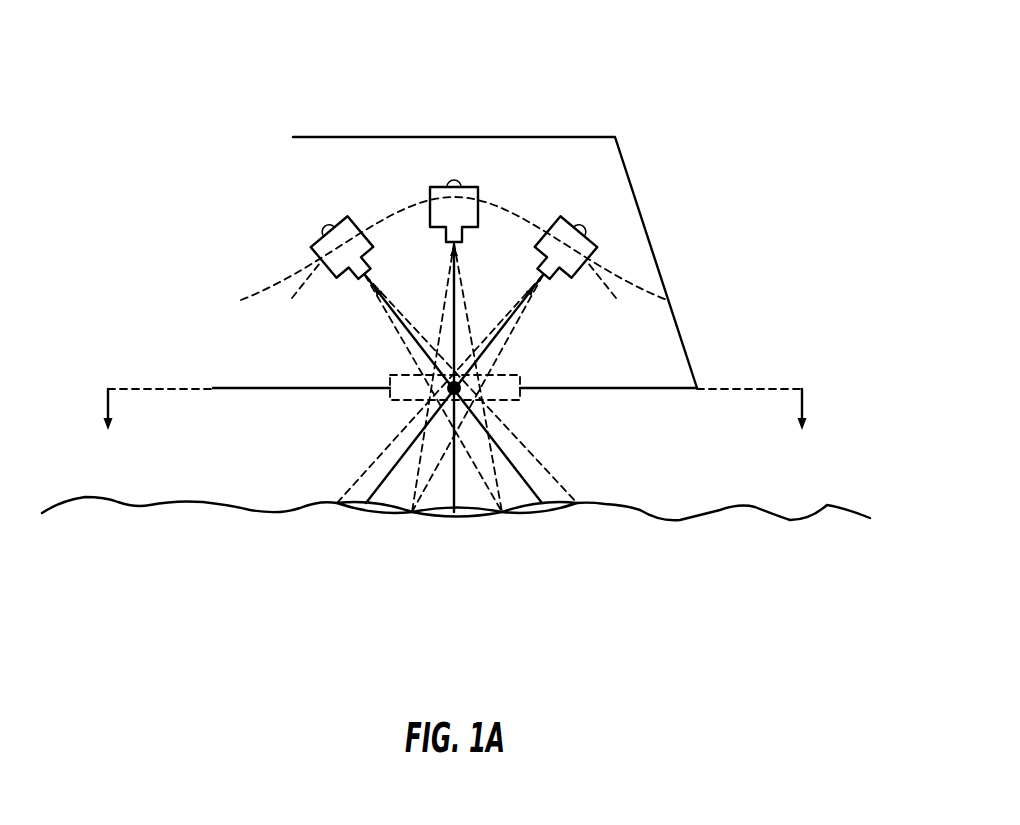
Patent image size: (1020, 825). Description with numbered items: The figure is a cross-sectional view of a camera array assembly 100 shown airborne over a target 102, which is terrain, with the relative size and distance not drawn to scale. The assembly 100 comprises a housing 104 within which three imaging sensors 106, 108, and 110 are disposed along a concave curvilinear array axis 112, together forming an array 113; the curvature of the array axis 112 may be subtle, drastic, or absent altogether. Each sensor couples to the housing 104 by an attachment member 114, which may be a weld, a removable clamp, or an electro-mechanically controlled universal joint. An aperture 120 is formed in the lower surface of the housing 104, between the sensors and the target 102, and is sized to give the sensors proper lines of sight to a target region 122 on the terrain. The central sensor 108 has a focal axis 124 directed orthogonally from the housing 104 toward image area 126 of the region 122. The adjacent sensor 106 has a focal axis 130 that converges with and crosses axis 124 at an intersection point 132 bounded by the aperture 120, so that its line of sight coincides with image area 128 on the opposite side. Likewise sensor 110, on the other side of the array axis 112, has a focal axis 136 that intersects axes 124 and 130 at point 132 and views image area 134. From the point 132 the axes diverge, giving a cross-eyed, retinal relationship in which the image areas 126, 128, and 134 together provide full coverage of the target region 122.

The camera array assembly 100 is at (684, 65).
The target 102 is at (826, 505).
The housing 104 is at (695, 373).
The imaging sensor 106 is at (348, 214).
The imaging sensor 108 is at (478, 188).
The imaging sensor 110 is at (559, 217).
The concave curvilinear array axis 112 is at (243, 300).
The array 113 is at (619, 267).
The attachment member 114 is at (323, 229).
The aperture 120 is at (393, 401).
The target region 122 is at (460, 573).
The focal axis 124 is at (451, 266).
The image area 126 is at (448, 519).
The image area 128 is at (545, 513).
The focal axis 130 is at (387, 306).
The intersection point 132 is at (462, 391).
The image area 134 is at (370, 513).
The focal axis 136 is at (523, 306).